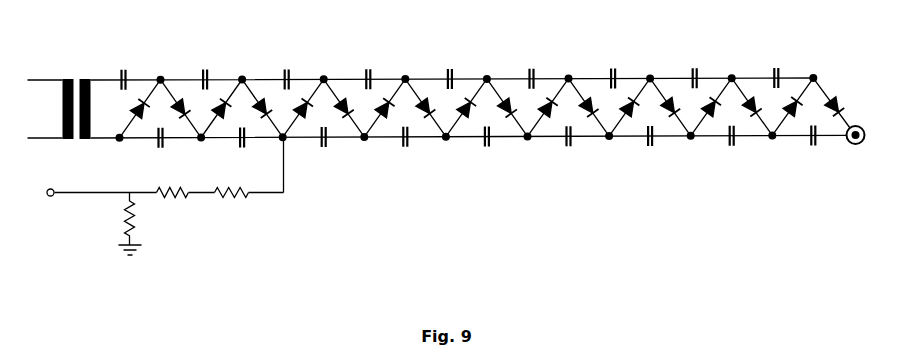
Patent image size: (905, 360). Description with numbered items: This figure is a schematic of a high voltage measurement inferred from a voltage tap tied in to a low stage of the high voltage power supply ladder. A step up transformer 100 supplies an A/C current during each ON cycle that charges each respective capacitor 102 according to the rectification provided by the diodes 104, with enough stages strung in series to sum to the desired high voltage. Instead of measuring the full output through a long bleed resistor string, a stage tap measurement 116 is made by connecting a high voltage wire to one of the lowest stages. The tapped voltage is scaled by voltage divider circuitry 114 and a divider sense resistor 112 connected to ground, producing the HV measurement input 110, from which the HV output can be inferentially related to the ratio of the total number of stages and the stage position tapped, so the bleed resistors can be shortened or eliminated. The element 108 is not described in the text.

The step up transformer 100 is at (67, 78).
The capacitor 102 is at (369, 62).
The diode 104 is at (339, 90).
The high voltage output terminal 108 is at (850, 124).
The HV measurement input 110 is at (48, 195).
The divider sense resistor 112 is at (138, 218).
The voltage divider circuitry 114 is at (170, 200).
The stage tap measurement 116 is at (285, 139).